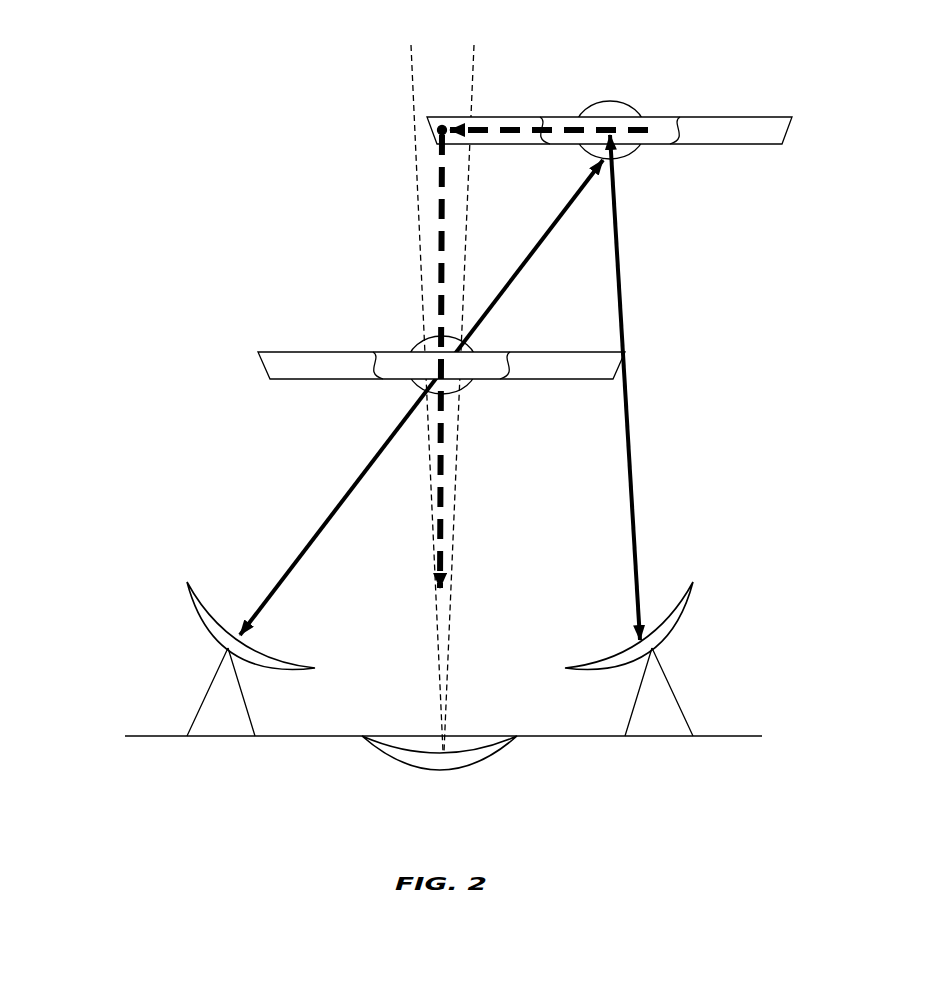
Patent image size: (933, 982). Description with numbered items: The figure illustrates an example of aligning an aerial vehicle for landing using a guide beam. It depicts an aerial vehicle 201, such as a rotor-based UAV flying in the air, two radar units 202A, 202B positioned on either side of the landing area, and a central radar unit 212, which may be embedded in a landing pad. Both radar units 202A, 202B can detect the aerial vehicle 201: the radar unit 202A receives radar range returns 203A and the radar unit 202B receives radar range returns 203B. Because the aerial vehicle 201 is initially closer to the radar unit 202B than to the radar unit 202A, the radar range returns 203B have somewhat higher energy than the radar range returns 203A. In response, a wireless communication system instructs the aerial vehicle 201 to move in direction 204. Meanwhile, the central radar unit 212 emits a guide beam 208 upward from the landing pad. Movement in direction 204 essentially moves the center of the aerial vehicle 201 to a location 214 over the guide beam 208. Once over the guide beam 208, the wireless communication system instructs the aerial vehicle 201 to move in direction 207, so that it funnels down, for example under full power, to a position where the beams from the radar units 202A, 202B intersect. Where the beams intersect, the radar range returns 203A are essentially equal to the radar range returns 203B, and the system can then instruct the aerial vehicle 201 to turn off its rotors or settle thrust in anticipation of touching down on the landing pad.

The aerial vehicle 201 is at (790, 125).
The radar unit 202A is at (217, 630).
The radar unit 202B is at (665, 627).
The radar range returns 203A is at (332, 512).
The radar range returns 203B is at (632, 490).
The direction 204 is at (505, 130).
The direction 207 is at (437, 259).
The guide beam 208 is at (410, 62).
The central radar unit 212 is at (483, 760).
The location 214 is at (440, 131).